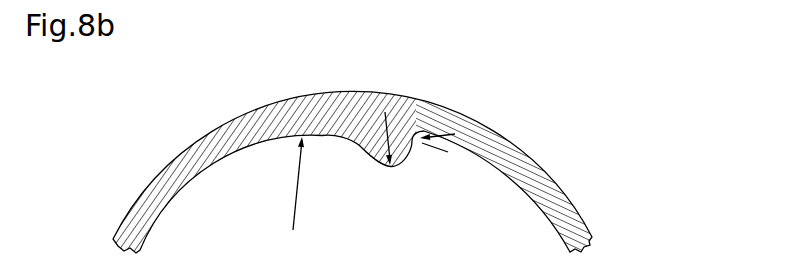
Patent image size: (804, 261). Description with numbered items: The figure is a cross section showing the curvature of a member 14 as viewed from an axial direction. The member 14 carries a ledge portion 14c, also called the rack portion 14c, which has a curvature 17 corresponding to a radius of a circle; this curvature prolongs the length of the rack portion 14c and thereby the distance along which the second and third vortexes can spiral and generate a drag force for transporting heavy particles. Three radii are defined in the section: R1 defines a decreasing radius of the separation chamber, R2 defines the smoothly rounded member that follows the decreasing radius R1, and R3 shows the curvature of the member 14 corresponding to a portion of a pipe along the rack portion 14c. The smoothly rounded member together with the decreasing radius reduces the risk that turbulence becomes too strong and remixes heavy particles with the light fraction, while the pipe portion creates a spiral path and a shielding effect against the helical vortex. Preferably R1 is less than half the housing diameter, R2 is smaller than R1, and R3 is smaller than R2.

The member 14 is at (370, 146).
The ledge portion 14c is at (421, 145).
The curvature 17 is at (421, 150).
The decreasing radius of the separation chamber R1 is at (296, 188).
The radius of the smoothly rounded member R2 is at (389, 158).
The radius of the portion of a pipe R3 is at (455, 134).